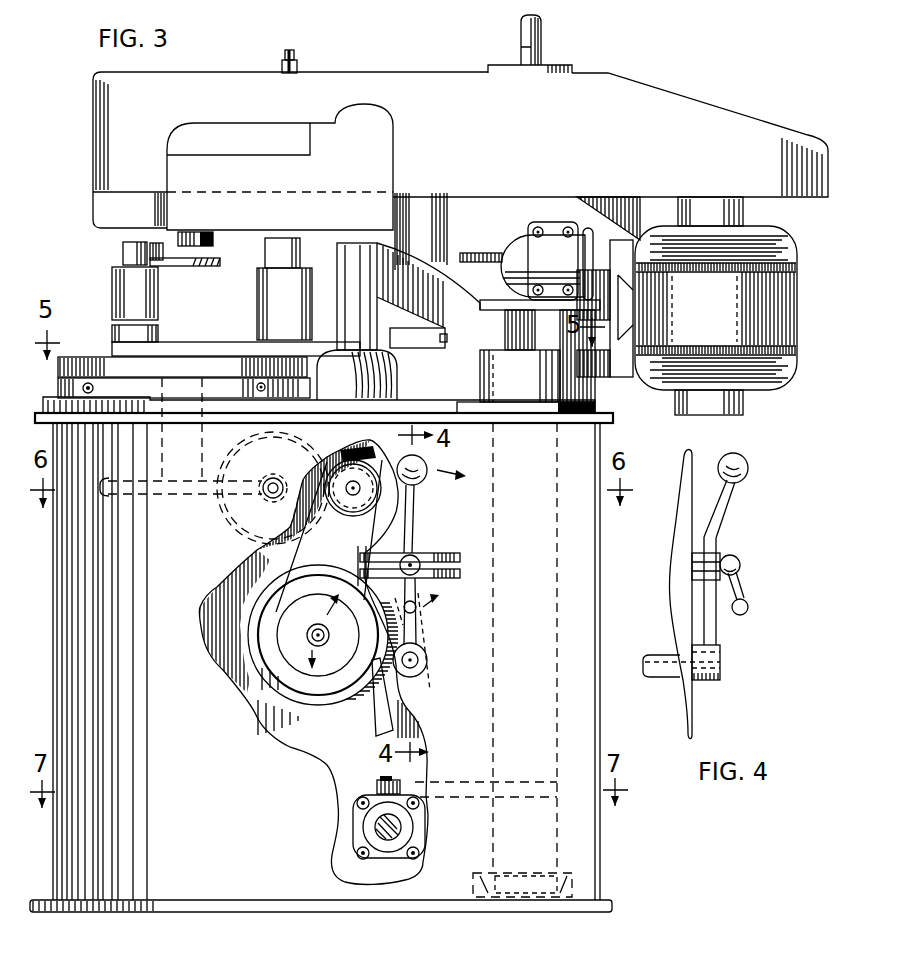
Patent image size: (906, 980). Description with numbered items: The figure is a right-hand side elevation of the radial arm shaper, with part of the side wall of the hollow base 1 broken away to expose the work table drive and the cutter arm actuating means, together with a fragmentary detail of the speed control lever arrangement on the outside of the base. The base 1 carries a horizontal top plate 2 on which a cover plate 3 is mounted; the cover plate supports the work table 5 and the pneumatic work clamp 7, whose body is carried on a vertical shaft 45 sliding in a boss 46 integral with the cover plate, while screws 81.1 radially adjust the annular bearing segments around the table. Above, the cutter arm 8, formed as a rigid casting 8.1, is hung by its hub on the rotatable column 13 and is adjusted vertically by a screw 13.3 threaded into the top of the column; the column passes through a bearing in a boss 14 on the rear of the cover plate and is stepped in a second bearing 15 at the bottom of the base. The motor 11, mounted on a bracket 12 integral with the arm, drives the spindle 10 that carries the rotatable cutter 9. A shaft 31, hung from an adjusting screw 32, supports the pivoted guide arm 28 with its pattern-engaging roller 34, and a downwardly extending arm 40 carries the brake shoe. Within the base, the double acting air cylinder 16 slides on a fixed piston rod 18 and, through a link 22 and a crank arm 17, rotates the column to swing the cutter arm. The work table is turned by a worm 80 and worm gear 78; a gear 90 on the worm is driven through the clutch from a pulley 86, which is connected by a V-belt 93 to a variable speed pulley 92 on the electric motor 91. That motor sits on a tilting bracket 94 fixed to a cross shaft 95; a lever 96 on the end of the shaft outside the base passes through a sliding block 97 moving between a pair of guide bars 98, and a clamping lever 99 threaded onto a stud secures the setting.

In FIG. 3, the hollow base 1 is at (183, 897).
In FIG. 4, the hollow base 1 is at (692, 711).
In FIG. 3, the horizontal top plate 2 is at (50, 413).
In FIG. 3, the cover plate 3 is at (48, 400).
In FIG. 3, the work table 5 is at (75, 357).
In FIG. 3, the work clamp 7 is at (270, 134).
In FIG. 3, the cutter arm 8 is at (200, 76).
In FIG. 3, the rigid casting 8.1 is at (435, 205).
In FIG. 3, the rotatable cutter 9 is at (112, 293).
In FIG. 3, the spindle 10 is at (123, 252).
In FIG. 3, the motor 11 is at (767, 382).
In FIG. 3, the motor bracket 12 is at (618, 221).
In FIG. 3, the column 13 is at (503, 327).
In FIG. 3, the screw 13.3 is at (541, 60).
In FIG. 3, the boss 14 is at (487, 373).
In FIG. 3, the second bearing 15 is at (567, 873).
In FIG. 3, the double acting air cylinder 16 is at (355, 792).
In FIG. 3, the crank arm 17 is at (463, 798).
In FIG. 3, the piston rod 18 is at (377, 825).
In FIG. 3, the link 22 is at (383, 780).
In FIG. 3, the guide arm 28 is at (205, 348).
In FIG. 3, the shaft 31 is at (266, 251).
In FIG. 3, the adjusting screw 32 is at (298, 63).
In FIG. 3, the roller 34 is at (160, 333).
In FIG. 3, the arm 40 is at (430, 350).
In FIG. 3, the vertical shaft 45 is at (368, 304).
In FIG. 3, the boss 46 is at (412, 380).
In FIG. 3, the worm gear 78 is at (155, 498).
In FIG. 3, the worm 80 is at (275, 481).
In FIG. 3, the screws 81.1 is at (95, 387).
In FIG. 3, the pulley 86 is at (353, 496).
In FIG. 3, the gear 90 is at (233, 533).
In FIG. 3, the electric motor 91 is at (257, 650).
In FIG. 3, the variable speed pulley 92 is at (290, 657).
In FIG. 3, the V-belt 93 is at (303, 558).
In FIG. 3, the tilting bracket 94 is at (372, 722).
In FIG. 3, the cross shaft 95 is at (416, 659).
In FIG. 4, the cross shaft 95 is at (660, 655).
In FIG. 3, the lever 96 is at (418, 528).
In FIG. 4, the lever 96 is at (723, 515).
In FIG. 3, the sliding block 97 is at (417, 622).
In FIG. 4, the sliding block 97 is at (735, 558).
In FIG. 3, the guide bars 98 is at (440, 553).
In FIG. 4, the guide bars 98 is at (714, 556).
In FIG. 4, the clamping lever 99 is at (741, 566).